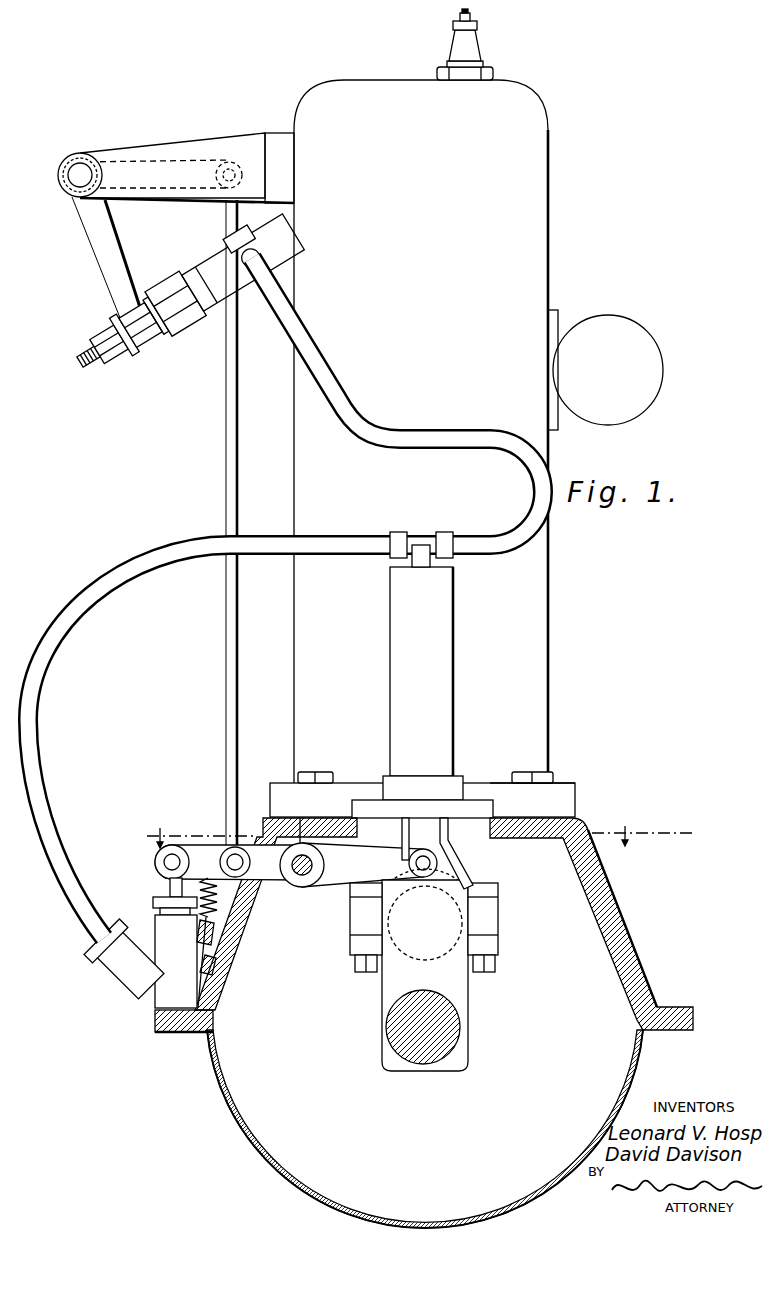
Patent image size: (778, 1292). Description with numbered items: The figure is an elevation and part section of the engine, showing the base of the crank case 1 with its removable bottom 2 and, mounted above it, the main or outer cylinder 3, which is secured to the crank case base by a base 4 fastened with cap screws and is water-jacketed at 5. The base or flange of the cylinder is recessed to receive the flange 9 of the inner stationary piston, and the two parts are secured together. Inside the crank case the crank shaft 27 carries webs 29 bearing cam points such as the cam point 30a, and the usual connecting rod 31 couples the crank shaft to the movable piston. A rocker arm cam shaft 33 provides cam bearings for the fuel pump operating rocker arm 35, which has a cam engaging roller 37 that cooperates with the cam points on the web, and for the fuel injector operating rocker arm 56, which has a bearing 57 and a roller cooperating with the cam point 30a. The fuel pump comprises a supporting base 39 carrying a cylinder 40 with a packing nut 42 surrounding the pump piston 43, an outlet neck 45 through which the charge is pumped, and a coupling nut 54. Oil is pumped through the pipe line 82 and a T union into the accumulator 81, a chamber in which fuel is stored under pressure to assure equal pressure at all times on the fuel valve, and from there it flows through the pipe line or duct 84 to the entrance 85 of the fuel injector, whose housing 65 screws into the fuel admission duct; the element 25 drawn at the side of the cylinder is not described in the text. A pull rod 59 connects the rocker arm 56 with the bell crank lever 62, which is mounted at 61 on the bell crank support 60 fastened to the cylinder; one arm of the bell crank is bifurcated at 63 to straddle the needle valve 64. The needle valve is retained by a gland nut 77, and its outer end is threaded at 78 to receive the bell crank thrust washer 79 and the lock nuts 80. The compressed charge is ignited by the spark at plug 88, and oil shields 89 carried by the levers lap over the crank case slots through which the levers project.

The base of the crank case 1 is at (578, 867).
The removable bottom 2 is at (218, 1028).
The main or outer cylinder 3 is at (421, 431).
The base 4 is at (532, 792).
The water jacket 5 is at (417, 835).
The flange of the inner or stationary piston 9 is at (562, 850).
The gauge bulb 25 is at (605, 370).
The crank shaft 27 is at (452, 968).
The web 29 is at (425, 975).
The cam point 30a is at (425, 884).
The connecting rod 31 is at (452, 840).
The rocker arm cam shaft 33 is at (422, 794).
The fuel pump operating rocker arm 35 is at (206, 846).
The cam engaging roller 37 is at (402, 842).
The supporting base 39 is at (222, 964).
The cylinder 40 is at (158, 926).
The packing nut 42 is at (155, 900).
The piston 43 is at (170, 882).
The outlet neck 45 is at (122, 984).
The coupling nut 54 is at (100, 962).
The fuel injector operating rocker arm 56 is at (302, 882).
The bearing 57 is at (369, 865).
The pull rod 59 is at (225, 505).
The bell crank support 60 is at (172, 152).
The bell crank mounting 61 is at (84, 164).
The bell crank lever 62 is at (86, 244).
The bifurcated arm 63 is at (133, 358).
The needle valve 64 is at (76, 365).
The housing 65 is at (206, 270).
The gland nut 77 is at (178, 338).
The threaded end 78 is at (96, 378).
The bell crank thrust washer 79 is at (110, 320).
The lock nuts 80 is at (88, 347).
The accumulator 81 is at (421, 671).
The pipe line 82 is at (38, 680).
The pipe line or duct 84 is at (322, 370).
The entrance of the fuel injector 85 is at (262, 252).
The spark plug 88 is at (456, 50).
The oil shield 89 is at (220, 936).